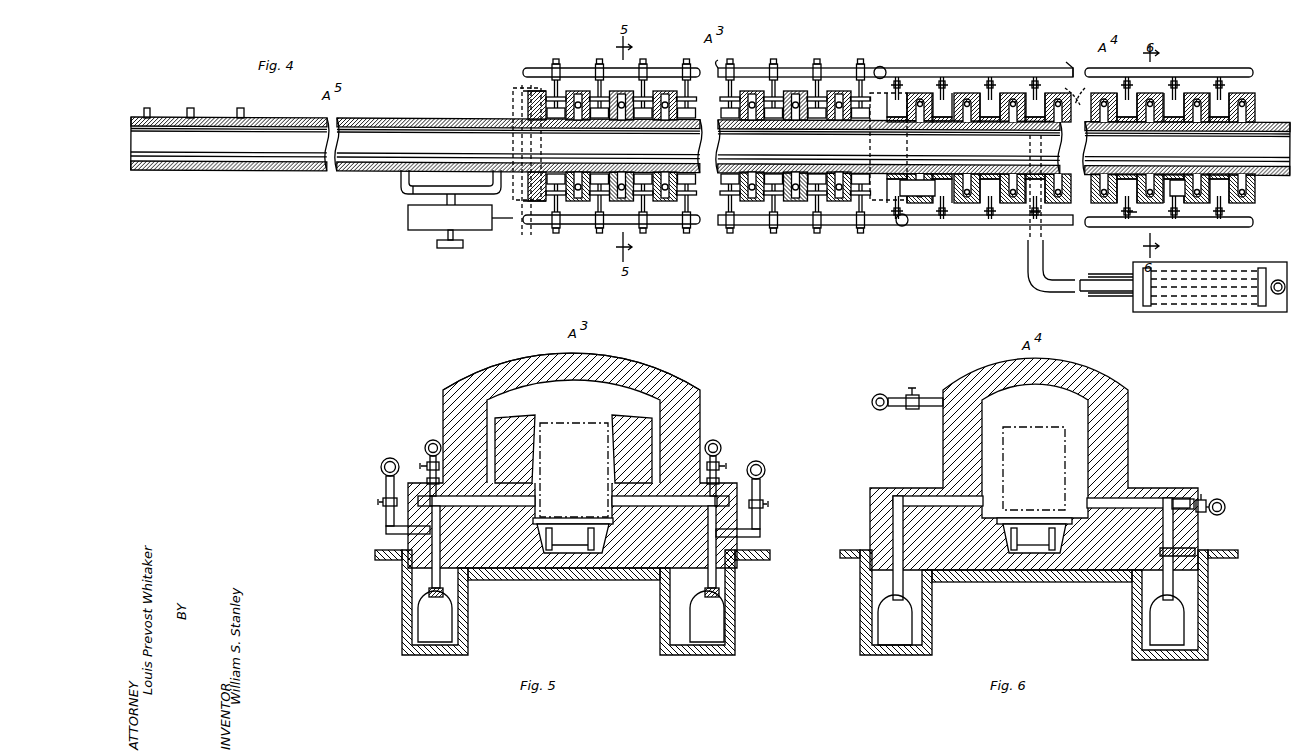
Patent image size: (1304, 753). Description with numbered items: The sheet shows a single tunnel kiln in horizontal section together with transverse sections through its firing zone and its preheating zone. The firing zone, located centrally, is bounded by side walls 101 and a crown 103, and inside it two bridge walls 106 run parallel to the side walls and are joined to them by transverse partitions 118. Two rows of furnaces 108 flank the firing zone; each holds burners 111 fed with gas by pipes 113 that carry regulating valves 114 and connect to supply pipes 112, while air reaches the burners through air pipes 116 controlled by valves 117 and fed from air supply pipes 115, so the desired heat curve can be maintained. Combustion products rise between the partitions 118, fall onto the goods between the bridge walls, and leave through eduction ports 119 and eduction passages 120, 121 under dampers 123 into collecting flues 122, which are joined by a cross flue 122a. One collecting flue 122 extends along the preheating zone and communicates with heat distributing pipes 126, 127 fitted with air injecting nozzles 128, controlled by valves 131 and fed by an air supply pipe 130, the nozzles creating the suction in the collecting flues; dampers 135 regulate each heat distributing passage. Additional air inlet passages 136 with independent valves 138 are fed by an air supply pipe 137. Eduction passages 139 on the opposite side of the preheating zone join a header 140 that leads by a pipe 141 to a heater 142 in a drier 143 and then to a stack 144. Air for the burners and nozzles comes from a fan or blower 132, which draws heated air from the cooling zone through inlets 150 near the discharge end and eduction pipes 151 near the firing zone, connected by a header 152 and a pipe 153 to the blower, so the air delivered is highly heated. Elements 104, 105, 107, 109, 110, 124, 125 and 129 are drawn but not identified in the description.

In FIG. 4, the side walls 101 is at (566, 130).
In FIG. 5, the side walls 101 is at (700, 399).
In FIG. 5, the crown 103 is at (606, 362).
In FIG. 5, the furnace chamber 104 is at (573, 431).
In FIG. 5, the charge 105 is at (600, 437).
In FIG. 5, the bridge walls 106 is at (595, 468).
In FIG. 5, the wall recess 107 is at (700, 440).
In FIG. 5, the furnaces or burners 108 is at (660, 575).
In FIG. 5, the hearth shelf 109 is at (573, 503).
In FIG. 6, the hearth shelf 109 is at (1034, 475).
In FIG. 4, the main pipe 110 is at (1114, 139).
In FIG. 5, the main pipe 110 is at (590, 553).
In FIG. 6, the main pipe 110 is at (1050, 553).
In FIG. 4, the burners 111 is at (772, 226).
In FIG. 5, the burners 111 is at (670, 585).
In FIG. 4, the supply pipes 112 is at (817, 212).
In FIG. 5, the supply pipes 112 is at (426, 445).
In FIG. 5, the pipes 113 is at (720, 479).
In FIG. 5, the regulating valves 114 is at (727, 466).
In FIG. 4, the air supply pipes 115 is at (700, 246).
In FIG. 5, the air supply pipes 115 is at (757, 461).
In FIG. 5, the air pipes 116 is at (762, 526).
In FIG. 4, the valves 117 is at (686, 226).
In FIG. 5, the valves 117 is at (764, 506).
In FIG. 5, the transverse partitions 118 is at (650, 445).
In FIG. 5, the eduction ports 119 is at (600, 490).
In FIG. 4, the eduction passages 120 is at (660, 129).
In FIG. 5, the eduction passages 120 is at (573, 500).
In FIG. 4, the eduction passages 121 is at (790, 226).
In FIG. 5, the eduction passages 121 is at (716, 560).
In FIG. 4, the collecting flues 122 is at (1088, 206).
In FIG. 5, the collecting flues 122 is at (571, 616).
In FIG. 6, the collecting flues 122 is at (1185, 605).
In FIG. 4, the cross flue 122a is at (526, 212).
In FIG. 5, the regulating means or dampers 123 is at (729, 503).
In FIG. 5, the fitting 124 is at (732, 503).
In FIG. 4, the fitting 125 is at (916, 190).
In FIG. 5, the fitting 125 is at (775, 498).
In FIG. 4, the heat distributing pipes 126 is at (1205, 190).
In FIG. 6, the heat distributing pipes 126 is at (1175, 580).
In FIG. 4, the heat distributing pipes 127 is at (1155, 183).
In FIG. 6, the heat distributing pipes 127 is at (1130, 498).
In FIG. 4, the air injecting nozzles 128 is at (912, 197).
In FIG. 6, the air injecting nozzles 128 is at (1180, 499).
In FIG. 4, the fitting 129 is at (918, 210).
In FIG. 6, the fitting 129 is at (1190, 499).
In FIG. 4, the air supply pipe 130 is at (1221, 228).
In FIG. 6, the air supply pipe 130 is at (1225, 507).
In FIG. 4, the valves 131 is at (1200, 212).
In FIG. 6, the valves 131 is at (1205, 500).
In FIG. 4, the fan or blower 132 is at (450, 226).
In FIG. 6, the dampers 135 is at (1195, 550).
In FIG. 4, the air inlet passages 136 is at (1218, 84).
In FIG. 6, the air inlet passages 136 is at (930, 398).
In FIG. 4, the air supply pipe 137 is at (1068, 73).
In FIG. 6, the air supply pipe 137 is at (878, 394).
In FIG. 4, the independent valves 138 is at (942, 84).
In FIG. 6, the independent valves 138 is at (912, 392).
In FIG. 4, the eduction passages 139 is at (967, 102).
In FIG. 6, the eduction passages 139 is at (905, 500).
In FIG. 4, the header or collecting flue 140 is at (1080, 93).
In FIG. 6, the header or collecting flue 140 is at (986, 602).
In FIG. 4, the pipe 141 is at (1043, 258).
In FIG. 4, the heater 142 is at (1218, 306).
In FIG. 4, the drier 143 is at (1178, 312).
In FIG. 4, the stack 144 is at (1276, 295).
In FIG. 4, the inlets 150 is at (190, 108).
In FIG. 4, the eduction pipes 151 is at (493, 180).
In FIG. 4, the header 152 is at (406, 191).
In FIG. 4, the pipe 153 is at (446, 199).